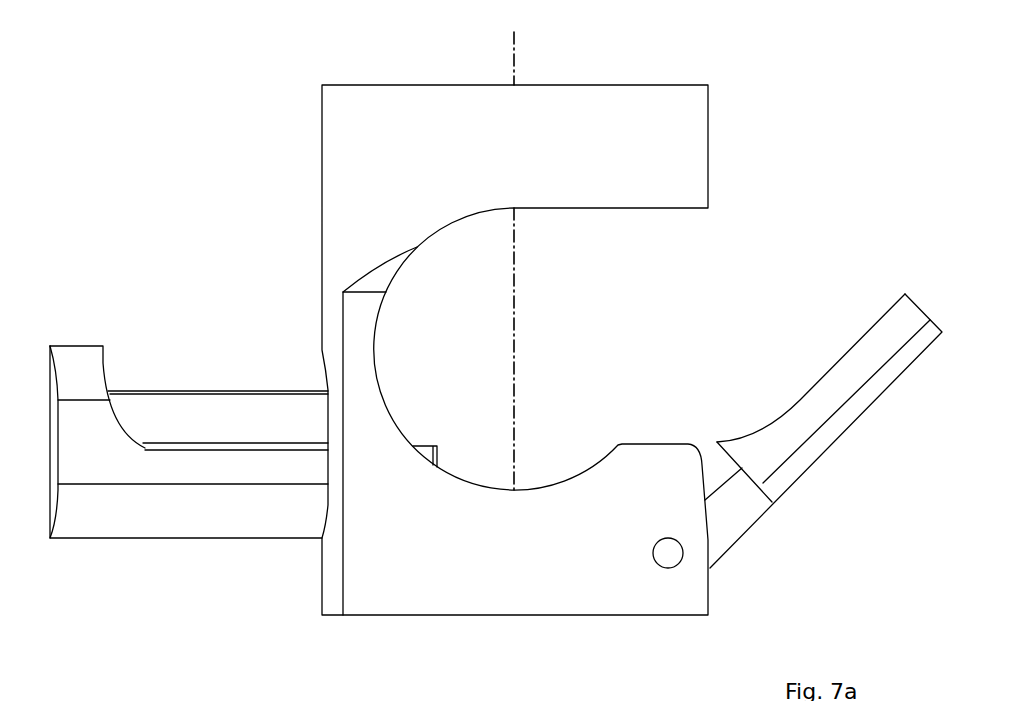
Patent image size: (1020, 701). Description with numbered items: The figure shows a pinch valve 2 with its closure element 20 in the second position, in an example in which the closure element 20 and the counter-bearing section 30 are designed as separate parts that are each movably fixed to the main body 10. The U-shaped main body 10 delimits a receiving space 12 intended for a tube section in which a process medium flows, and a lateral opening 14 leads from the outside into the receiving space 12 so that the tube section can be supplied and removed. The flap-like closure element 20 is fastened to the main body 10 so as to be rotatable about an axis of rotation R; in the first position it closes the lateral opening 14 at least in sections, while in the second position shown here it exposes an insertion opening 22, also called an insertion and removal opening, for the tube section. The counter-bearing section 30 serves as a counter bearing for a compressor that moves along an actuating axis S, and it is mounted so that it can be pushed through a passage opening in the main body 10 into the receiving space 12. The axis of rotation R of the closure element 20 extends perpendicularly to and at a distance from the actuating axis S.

The pinch valve 2 is at (110, 172).
The main body 10 is at (338, 162).
The receiving space 12 is at (446, 364).
The lateral opening 14 is at (703, 300).
The closure element 20 is at (845, 373).
The insertion opening 22 is at (763, 205).
The counter-bearing section 30 is at (216, 402).
The actuating axis S is at (505, 48).
The axis of rotation R is at (658, 562).